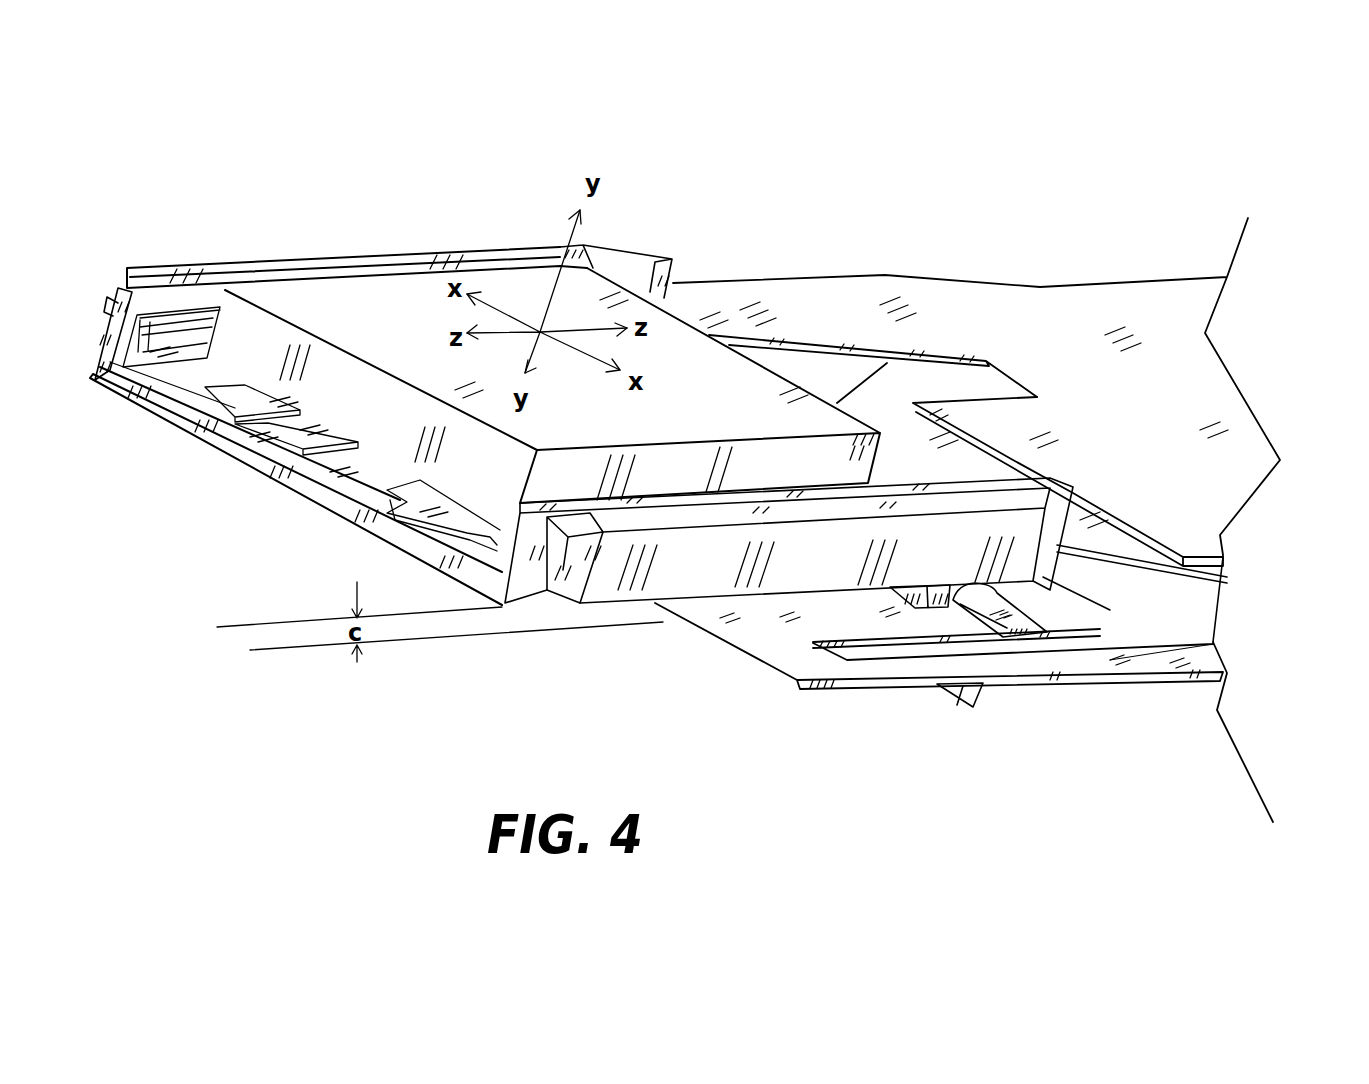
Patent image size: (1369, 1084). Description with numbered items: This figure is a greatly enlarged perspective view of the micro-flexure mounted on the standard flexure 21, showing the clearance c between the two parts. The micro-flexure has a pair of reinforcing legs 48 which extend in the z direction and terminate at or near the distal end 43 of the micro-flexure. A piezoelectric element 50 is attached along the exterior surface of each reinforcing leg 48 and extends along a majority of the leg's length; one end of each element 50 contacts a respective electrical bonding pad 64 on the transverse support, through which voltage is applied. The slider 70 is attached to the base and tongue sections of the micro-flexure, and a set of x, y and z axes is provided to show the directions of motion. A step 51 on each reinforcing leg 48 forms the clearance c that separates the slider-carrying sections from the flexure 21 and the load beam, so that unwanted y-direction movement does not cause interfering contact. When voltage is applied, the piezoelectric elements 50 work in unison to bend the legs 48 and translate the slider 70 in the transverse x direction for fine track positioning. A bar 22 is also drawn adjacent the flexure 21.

The standard flexure 21 is at (1068, 336).
The bar 22 is at (972, 385).
The distal end of the micro-flexure 43 is at (298, 485).
The reinforcing legs 48 is at (648, 258).
The piezoelectric elements 50 is at (360, 262).
The step 51 is at (913, 608).
The electrical bonding pads 64 is at (1028, 640).
The slider 70 is at (718, 381).